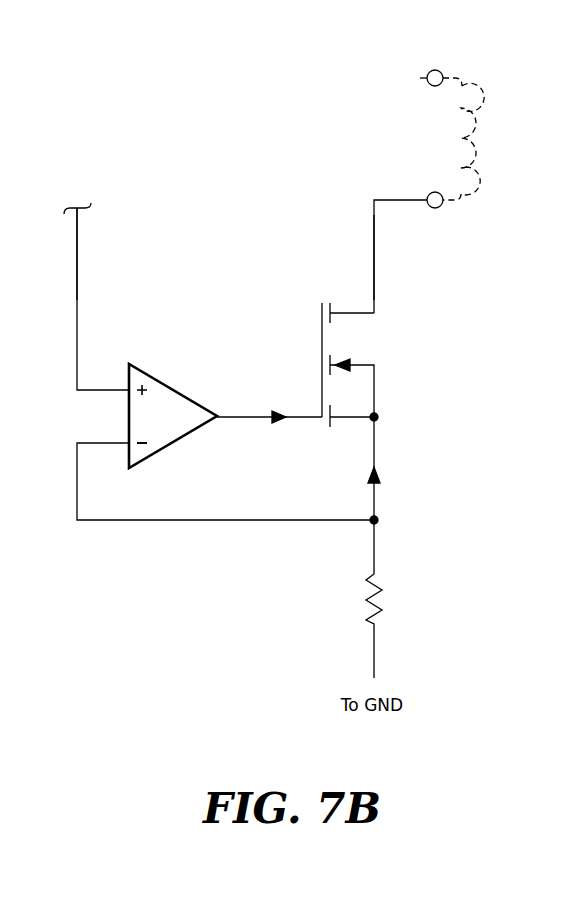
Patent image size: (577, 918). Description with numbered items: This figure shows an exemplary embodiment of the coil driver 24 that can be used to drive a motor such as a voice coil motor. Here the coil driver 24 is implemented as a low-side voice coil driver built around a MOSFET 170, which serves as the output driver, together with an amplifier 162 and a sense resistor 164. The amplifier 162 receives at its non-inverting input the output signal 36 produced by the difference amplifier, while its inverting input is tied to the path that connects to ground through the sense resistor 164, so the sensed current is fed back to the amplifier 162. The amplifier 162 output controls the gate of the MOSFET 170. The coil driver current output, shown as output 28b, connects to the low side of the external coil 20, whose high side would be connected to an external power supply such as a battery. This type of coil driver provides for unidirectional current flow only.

The coil driver 24 is at (216, 111).
The coil 20 is at (486, 131).
The output 28b is at (374, 262).
The output signal 36 is at (77, 296).
The MOSFET 170 is at (314, 331).
The amplifier 162 is at (173, 416).
The sense resistor 164 is at (380, 592).